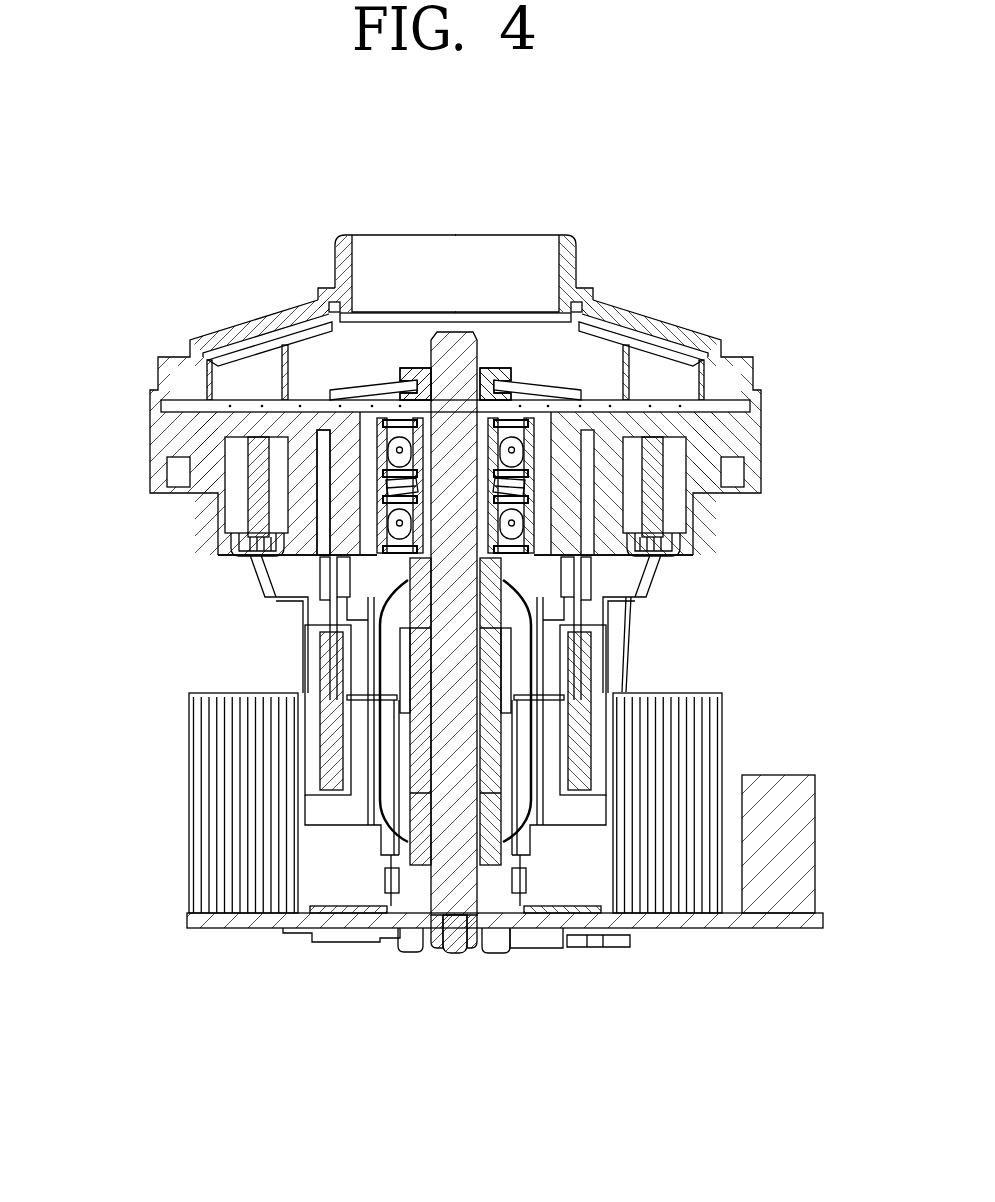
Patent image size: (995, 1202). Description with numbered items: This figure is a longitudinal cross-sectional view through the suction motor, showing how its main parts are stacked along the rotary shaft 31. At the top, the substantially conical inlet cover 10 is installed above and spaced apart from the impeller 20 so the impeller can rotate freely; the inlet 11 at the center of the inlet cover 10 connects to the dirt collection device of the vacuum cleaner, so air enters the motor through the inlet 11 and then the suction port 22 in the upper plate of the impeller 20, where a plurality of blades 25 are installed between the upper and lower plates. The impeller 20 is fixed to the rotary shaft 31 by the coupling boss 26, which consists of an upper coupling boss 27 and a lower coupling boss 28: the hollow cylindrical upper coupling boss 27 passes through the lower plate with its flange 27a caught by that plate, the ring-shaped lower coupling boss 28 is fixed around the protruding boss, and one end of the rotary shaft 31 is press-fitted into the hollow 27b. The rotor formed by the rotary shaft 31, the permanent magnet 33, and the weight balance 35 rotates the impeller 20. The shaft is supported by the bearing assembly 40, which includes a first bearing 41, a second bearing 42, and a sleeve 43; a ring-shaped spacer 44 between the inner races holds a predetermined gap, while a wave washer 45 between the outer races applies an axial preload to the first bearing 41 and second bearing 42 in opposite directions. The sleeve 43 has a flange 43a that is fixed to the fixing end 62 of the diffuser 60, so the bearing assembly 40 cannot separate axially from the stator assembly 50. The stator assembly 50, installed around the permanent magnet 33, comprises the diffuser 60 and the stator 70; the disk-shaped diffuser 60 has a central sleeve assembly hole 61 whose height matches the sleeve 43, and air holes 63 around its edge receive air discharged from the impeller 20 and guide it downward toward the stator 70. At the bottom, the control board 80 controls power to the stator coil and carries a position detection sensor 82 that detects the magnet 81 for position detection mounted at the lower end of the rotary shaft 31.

The inlet cover 10 is at (446, 365).
The inlet 11 is at (372, 262).
The impeller 20 is at (252, 330).
The suction port 22 is at (411, 316).
The blades 25 is at (228, 373).
The coupling boss 26 is at (423, 271).
The upper coupling boss 27 is at (505, 392).
The flange 27a is at (412, 390).
The hollow 27b is at (474, 380).
The lower coupling boss 28 is at (528, 382).
The rotary shaft 31 is at (463, 620).
The permanent magnet 33 is at (420, 737).
The weight balance 35 is at (420, 825).
The bearing assembly 40 is at (280, 489).
The first bearing 41 is at (372, 438).
The second bearing 42 is at (277, 547).
The sleeve 43 is at (347, 465).
The flange 43a is at (587, 548).
The spacer 44 is at (380, 477).
The wave washer 45 is at (367, 525).
The stator assembly 50 is at (495, 734).
The diffuser 60 is at (533, 496).
The sleeve assembly hole 61 is at (600, 434).
The fixing end 62 is at (627, 520).
The air holes 63 is at (182, 403).
The stator 70 is at (652, 668).
The control board 80 is at (505, 904).
The magnet for position detection 81 is at (488, 955).
The position detection sensor 82 is at (412, 948).